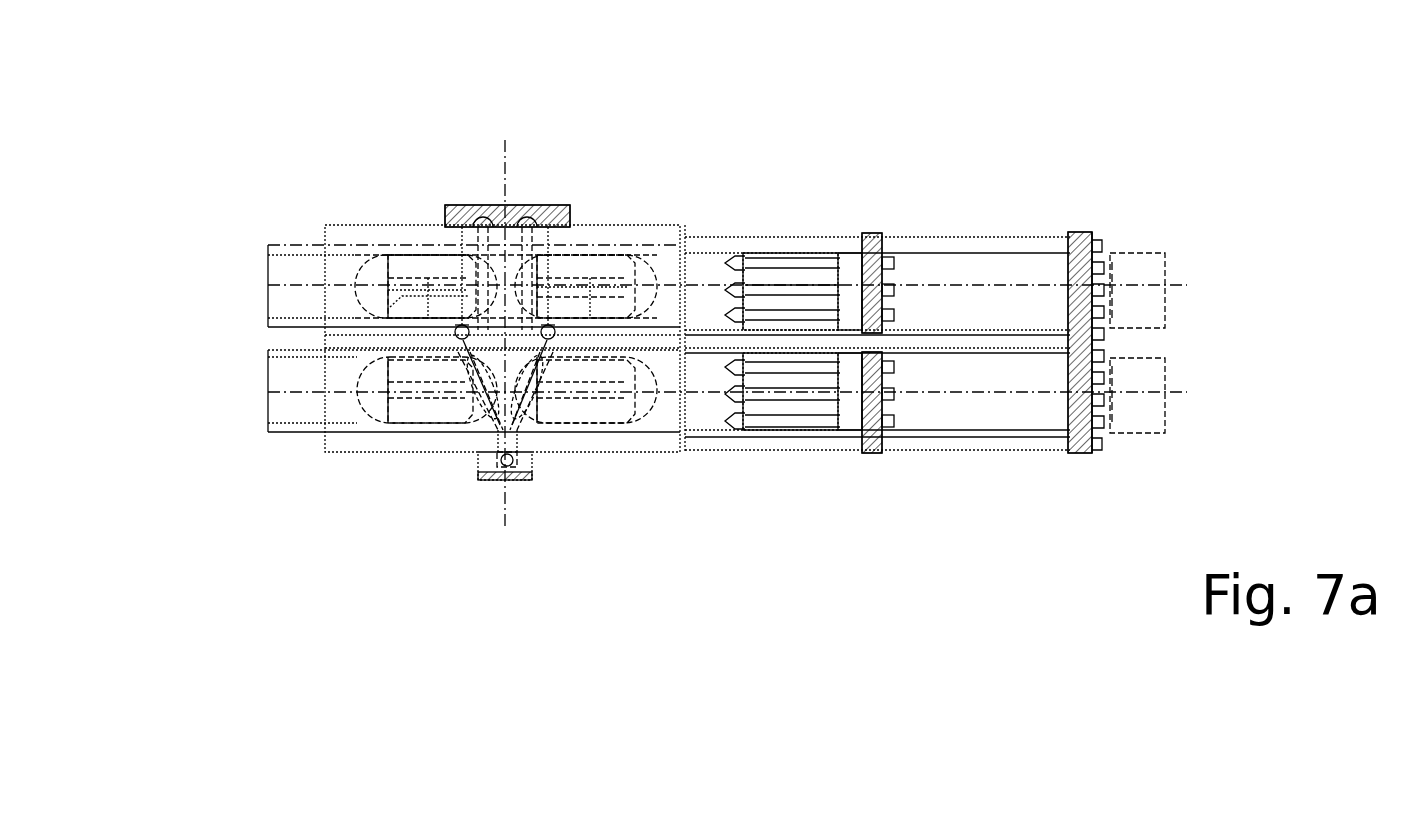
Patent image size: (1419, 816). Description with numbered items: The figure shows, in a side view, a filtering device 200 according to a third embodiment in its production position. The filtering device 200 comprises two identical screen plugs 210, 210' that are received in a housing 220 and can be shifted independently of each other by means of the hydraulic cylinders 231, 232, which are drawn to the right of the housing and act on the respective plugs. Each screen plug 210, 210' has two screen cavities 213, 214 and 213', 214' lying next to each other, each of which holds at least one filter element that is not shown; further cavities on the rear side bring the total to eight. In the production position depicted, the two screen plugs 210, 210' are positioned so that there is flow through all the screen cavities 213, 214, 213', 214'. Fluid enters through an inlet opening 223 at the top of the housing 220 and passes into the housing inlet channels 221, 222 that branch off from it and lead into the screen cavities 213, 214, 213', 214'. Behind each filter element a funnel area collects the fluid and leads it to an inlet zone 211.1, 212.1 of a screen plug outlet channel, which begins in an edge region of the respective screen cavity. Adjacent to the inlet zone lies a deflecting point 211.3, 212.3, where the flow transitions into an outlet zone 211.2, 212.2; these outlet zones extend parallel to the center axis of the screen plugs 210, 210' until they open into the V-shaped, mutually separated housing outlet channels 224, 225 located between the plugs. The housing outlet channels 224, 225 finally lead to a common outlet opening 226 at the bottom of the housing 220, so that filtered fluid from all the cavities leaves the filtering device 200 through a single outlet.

The filtering device 200 is at (1196, 133).
The screen plug 210 is at (406, 284).
The screen plug 210' is at (402, 378).
The inlet zone 211.1 is at (385, 312).
The outlet zone 211.2 is at (428, 295).
The deflecting point 211.3 is at (375, 298).
The inlet zone 212.1 is at (640, 305).
The outlet zone 212.2 is at (590, 320).
The deflecting point 212.3 is at (657, 262).
The screen cavity 213 is at (417, 208).
The screen cavity 213' is at (411, 470).
The screen cavity 214 is at (586, 176).
The screen cavity 214' is at (586, 470).
The housing 220 is at (323, 443).
The housing inlet channel 221 is at (533, 250).
The housing inlet channel 222 is at (480, 212).
The inlet opening 223 is at (498, 226).
The housing outlet channel 224 is at (493, 420).
The housing outlet channel 225 is at (516, 430).
The outlet opening 226 is at (505, 466).
The hydraulic cylinder 231 is at (932, 260).
The hydraulic cylinder 232 is at (1010, 368).